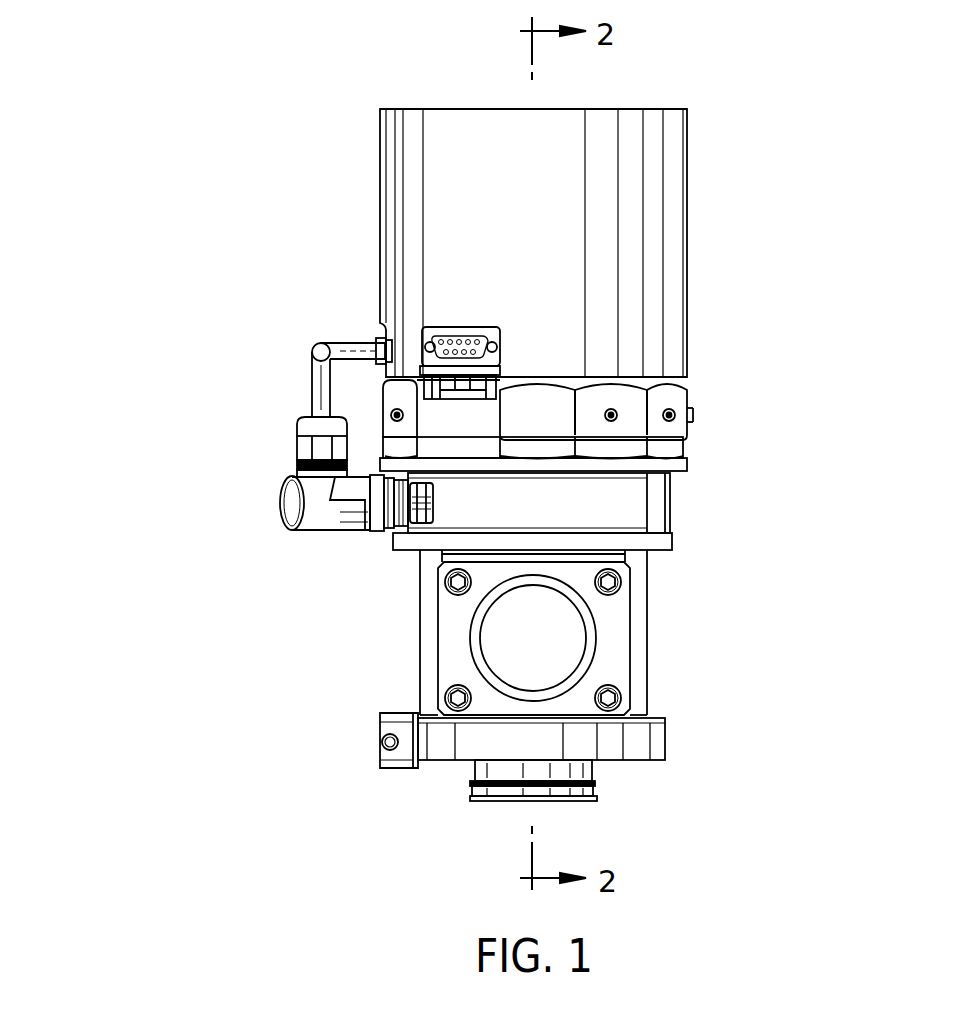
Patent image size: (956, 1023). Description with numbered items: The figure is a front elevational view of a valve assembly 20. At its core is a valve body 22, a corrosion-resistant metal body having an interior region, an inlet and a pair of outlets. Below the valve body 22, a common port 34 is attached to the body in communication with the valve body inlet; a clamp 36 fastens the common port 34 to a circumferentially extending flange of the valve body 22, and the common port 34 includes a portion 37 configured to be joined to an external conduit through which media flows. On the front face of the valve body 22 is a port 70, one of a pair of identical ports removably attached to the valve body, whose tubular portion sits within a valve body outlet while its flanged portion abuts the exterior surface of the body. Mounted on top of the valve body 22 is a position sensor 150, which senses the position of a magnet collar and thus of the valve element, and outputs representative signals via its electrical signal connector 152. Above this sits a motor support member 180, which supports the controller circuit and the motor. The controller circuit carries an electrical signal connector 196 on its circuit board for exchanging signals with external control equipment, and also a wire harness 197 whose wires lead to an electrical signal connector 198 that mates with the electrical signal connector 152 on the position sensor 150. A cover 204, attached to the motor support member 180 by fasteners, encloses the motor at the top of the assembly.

The valve assembly 20 is at (185, 260).
The valve body 22 is at (672, 543).
The common port 34 is at (595, 775).
The clamp 36 is at (380, 757).
The portion of common port 37 is at (465, 795).
The port 70 is at (610, 628).
The position sensor 150 is at (670, 493).
The electrical signal connector 152 is at (433, 512).
The motor support member 180 is at (687, 402).
The electrical signal connector 196 is at (462, 333).
The wire harness 197 is at (322, 342).
The electrical signal connector 198 is at (363, 530).
The cover 204 is at (686, 243).